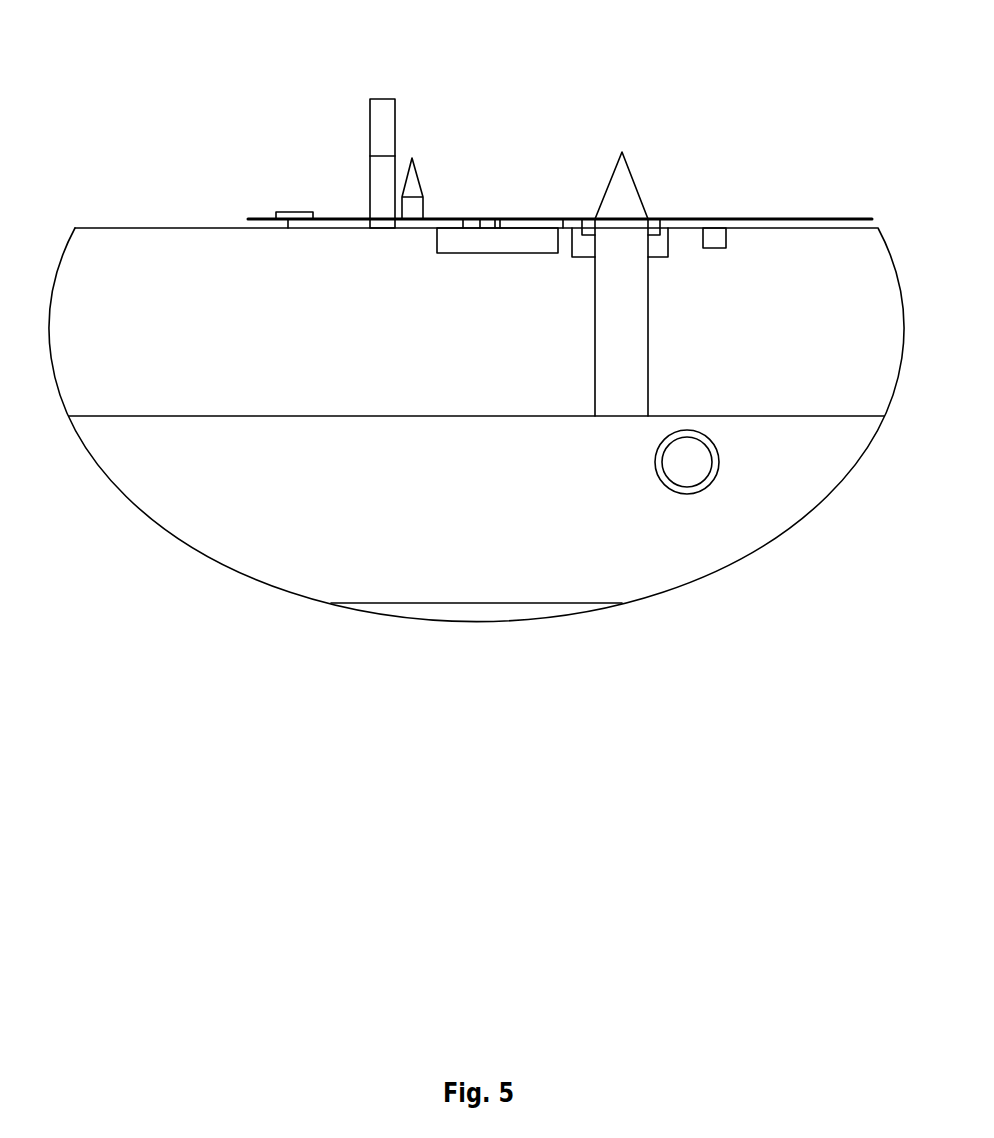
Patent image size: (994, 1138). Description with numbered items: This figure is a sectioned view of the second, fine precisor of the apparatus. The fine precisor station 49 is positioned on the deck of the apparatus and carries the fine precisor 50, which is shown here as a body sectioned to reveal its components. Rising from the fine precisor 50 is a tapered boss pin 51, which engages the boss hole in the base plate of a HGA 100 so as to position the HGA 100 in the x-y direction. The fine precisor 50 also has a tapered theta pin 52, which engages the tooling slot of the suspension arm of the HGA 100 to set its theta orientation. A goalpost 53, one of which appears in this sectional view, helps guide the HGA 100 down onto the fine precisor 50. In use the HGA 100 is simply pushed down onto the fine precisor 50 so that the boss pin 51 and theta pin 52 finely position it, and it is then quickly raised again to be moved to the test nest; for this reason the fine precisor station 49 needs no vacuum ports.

The fine precisor station 49 is at (127, 211).
The fine precisor 50 is at (596, 75).
The tapered boss pin 51 is at (623, 196).
The tapered theta pin 52 is at (421, 179).
The goalpost 53 is at (383, 127).
The HGA 100 is at (811, 216).